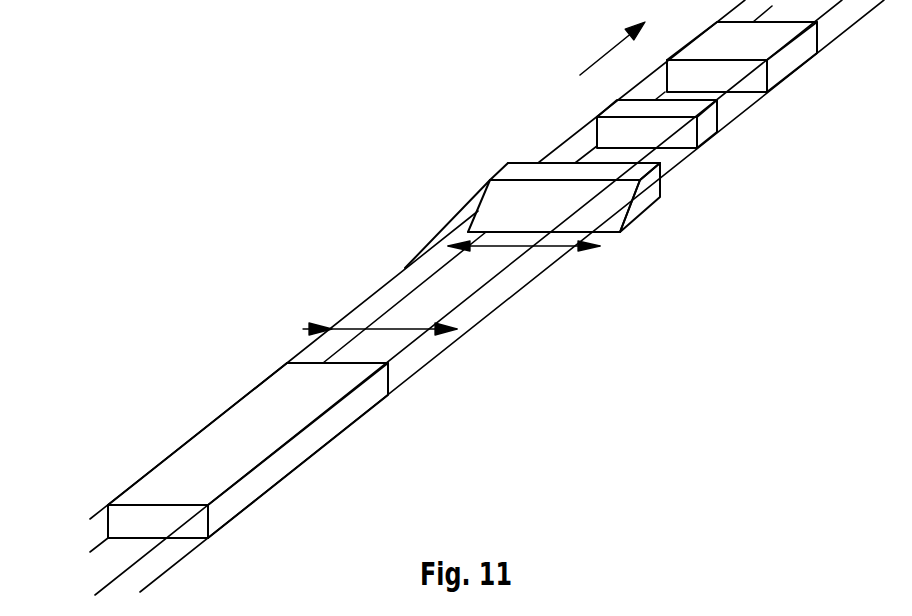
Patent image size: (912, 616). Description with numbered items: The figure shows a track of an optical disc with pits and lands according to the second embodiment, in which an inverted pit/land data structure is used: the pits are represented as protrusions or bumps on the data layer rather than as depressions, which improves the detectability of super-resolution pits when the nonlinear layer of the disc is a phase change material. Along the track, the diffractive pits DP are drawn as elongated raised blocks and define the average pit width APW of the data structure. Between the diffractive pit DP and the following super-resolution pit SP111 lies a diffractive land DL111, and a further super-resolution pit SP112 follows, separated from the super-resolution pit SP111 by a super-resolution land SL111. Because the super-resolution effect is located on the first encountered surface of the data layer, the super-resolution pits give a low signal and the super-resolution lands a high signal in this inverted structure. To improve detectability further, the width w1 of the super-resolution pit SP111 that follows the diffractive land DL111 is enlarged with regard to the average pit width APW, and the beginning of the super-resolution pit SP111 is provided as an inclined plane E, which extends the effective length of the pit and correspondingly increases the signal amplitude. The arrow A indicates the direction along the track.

The diffractive pit DP is at (466, 297).
The super-resolution pit SP111 is at (476, 215).
The super-resolution pit SP112 is at (555, 122).
The super-resolution land SL111 is at (547, 184).
The diffractive land DL111 is at (512, 296).
The inclined plane E is at (668, 213).
The average pit width APW is at (372, 290).
The width of super-resolution pit w1 is at (524, 300).
The conveying direction A is at (603, 48).